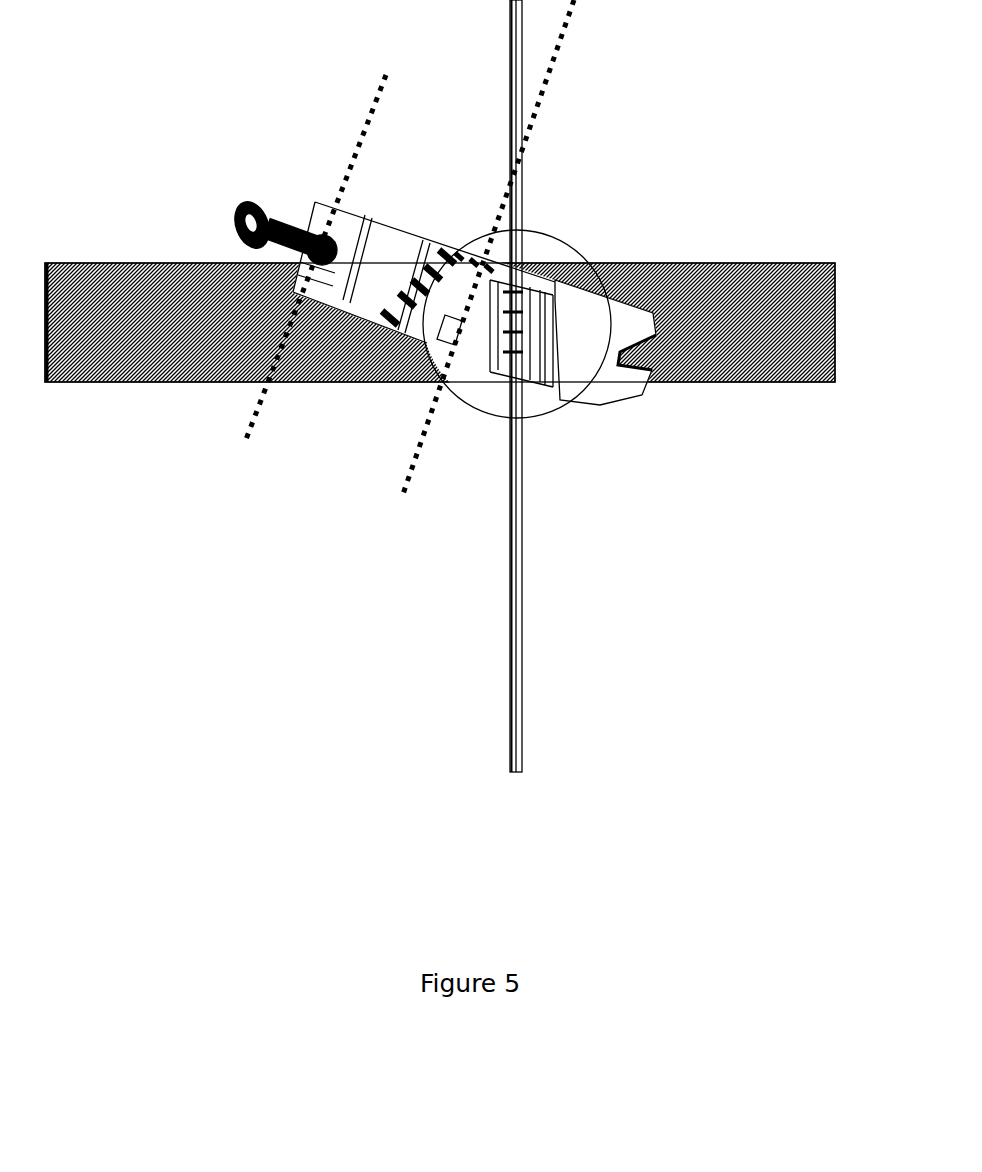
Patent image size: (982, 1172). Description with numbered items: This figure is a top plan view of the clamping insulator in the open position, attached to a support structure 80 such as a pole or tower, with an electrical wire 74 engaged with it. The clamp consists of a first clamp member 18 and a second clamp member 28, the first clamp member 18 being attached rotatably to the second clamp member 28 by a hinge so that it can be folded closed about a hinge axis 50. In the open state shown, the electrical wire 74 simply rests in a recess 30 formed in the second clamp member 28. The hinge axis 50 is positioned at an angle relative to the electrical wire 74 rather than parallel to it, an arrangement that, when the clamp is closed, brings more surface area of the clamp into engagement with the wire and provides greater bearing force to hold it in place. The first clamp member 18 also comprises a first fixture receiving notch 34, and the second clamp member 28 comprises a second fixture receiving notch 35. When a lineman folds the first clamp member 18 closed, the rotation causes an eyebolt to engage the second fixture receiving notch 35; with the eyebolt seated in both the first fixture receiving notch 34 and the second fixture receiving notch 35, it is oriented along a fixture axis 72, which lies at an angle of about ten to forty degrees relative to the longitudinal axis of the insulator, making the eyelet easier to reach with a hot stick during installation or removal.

The first clamp member 18 is at (404, 235).
The second clamp member 28 is at (580, 313).
The recess 30 is at (530, 355).
The first fixture receiving notch 34 is at (334, 285).
The second fixture receiving notch 35 is at (618, 357).
The hinge axis 50 is at (555, 62).
The fixture axis 72 is at (362, 140).
The electrical wire 74 is at (523, 486).
The support structure 80 is at (145, 343).